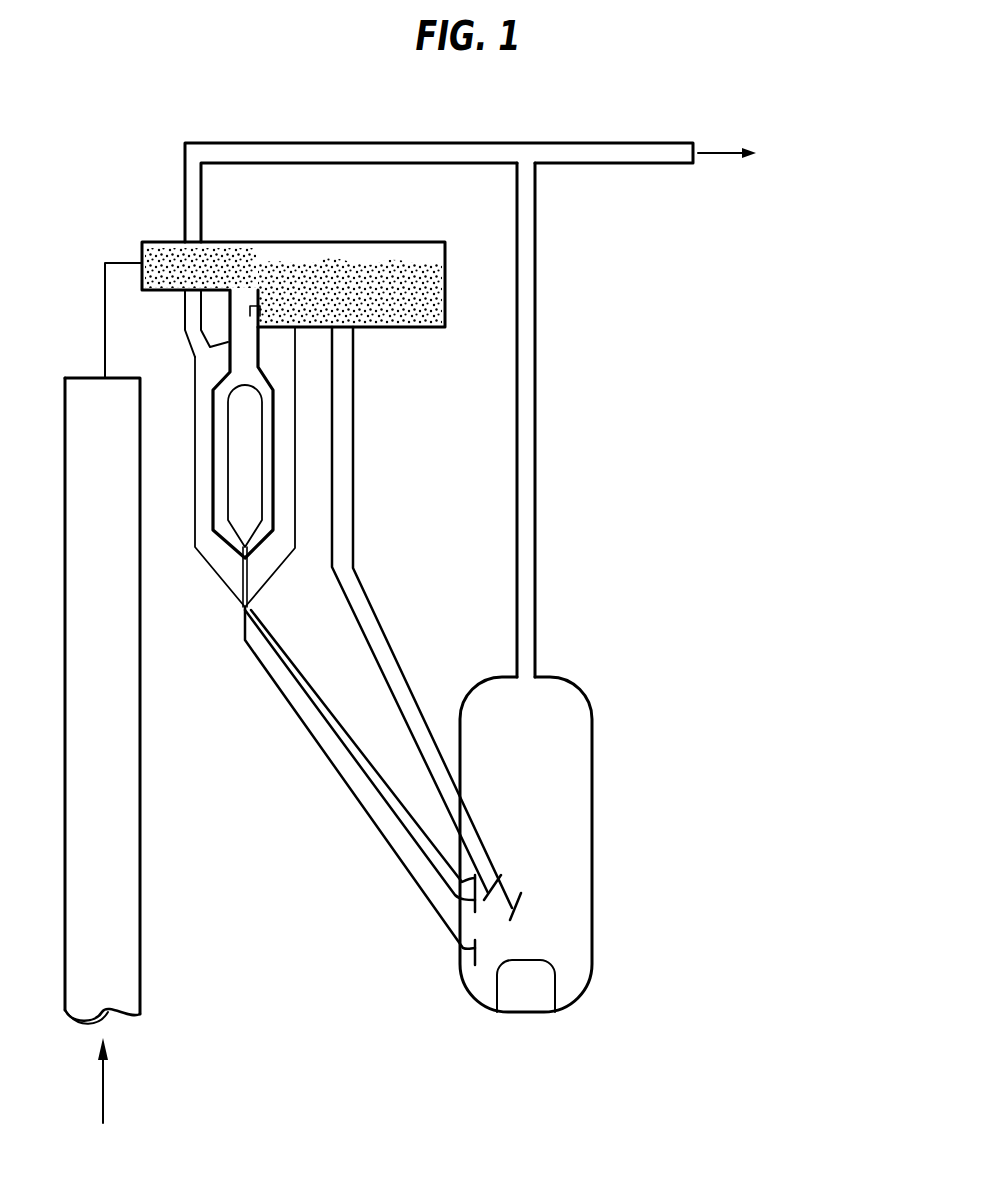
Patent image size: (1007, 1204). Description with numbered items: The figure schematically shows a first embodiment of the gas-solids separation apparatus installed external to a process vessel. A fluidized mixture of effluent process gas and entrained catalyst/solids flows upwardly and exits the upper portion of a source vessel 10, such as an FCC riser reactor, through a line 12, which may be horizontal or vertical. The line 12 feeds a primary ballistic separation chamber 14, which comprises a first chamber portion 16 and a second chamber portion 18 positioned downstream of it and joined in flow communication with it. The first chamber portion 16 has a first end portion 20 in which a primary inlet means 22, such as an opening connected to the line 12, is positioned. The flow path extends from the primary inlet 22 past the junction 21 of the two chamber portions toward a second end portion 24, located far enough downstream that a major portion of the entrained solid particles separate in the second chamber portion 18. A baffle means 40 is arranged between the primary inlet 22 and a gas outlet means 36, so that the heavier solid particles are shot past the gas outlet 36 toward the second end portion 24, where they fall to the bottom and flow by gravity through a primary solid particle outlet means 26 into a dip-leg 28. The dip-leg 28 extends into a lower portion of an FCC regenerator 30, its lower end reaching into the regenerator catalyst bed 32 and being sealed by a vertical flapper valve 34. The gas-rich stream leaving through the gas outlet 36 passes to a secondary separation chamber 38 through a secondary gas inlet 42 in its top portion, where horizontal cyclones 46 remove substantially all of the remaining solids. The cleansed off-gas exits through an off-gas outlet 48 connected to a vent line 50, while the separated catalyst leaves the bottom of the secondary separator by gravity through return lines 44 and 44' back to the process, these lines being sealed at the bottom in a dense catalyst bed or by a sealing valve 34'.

The source vessel 10 is at (91, 619).
The line 12 is at (103, 311).
The primary ballistic separation chamber 14 is at (384, 240).
The first chamber portion 16 is at (187, 254).
The second chamber portion 18 is at (327, 266).
The first end portion 20 is at (142, 250).
The junction 21 is at (271, 266).
The primary inlet means 22 is at (142, 273).
The second end portion 24 is at (445, 285).
The primary solid particle outlet means 26 is at (343, 330).
The dip-leg 28 is at (357, 463).
The FCC regenerator 30 is at (594, 786).
The regenerator catalyst bed 32 is at (460, 842).
The vertical flapper valve 34 is at (571, 897).
The sealing valve 34' is at (459, 1000).
The gas outlet means 36 is at (243, 343).
The secondary separation chamber 38 is at (195, 452).
The baffle means 40 is at (240, 287).
The secondary gas inlet 42 is at (257, 350).
The return line 44 is at (360, 778).
The return line 44' is at (360, 761).
The horizontal cyclones 46 is at (263, 476).
The off-gas outlet 48 is at (195, 358).
The vent line 50 is at (577, 143).